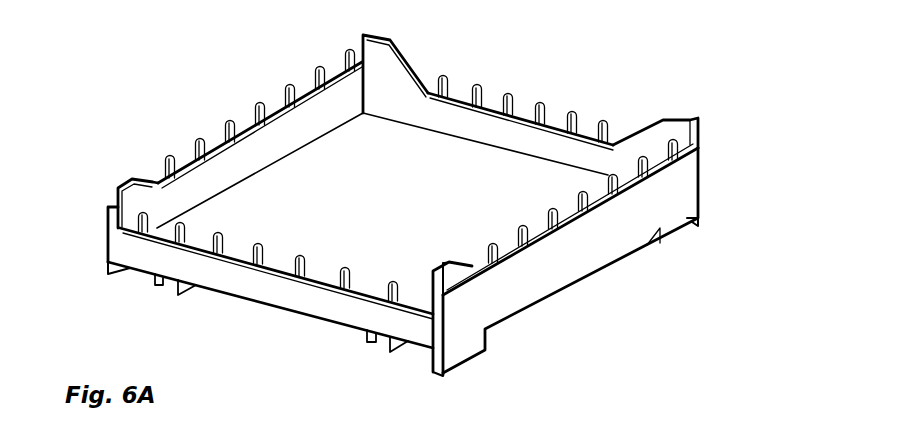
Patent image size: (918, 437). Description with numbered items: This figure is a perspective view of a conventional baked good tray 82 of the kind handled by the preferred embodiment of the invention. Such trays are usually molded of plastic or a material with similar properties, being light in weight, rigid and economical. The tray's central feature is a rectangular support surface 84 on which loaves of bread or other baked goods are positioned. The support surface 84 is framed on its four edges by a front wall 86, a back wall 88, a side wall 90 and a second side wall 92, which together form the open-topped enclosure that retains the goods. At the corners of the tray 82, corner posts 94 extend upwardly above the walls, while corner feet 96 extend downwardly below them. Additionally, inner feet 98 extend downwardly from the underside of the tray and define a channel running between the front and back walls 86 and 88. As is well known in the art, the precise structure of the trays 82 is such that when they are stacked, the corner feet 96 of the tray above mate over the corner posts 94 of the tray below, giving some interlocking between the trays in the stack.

The baked good tray 82 is at (597, 77).
The support surface 84 is at (365, 212).
The front wall 86 is at (273, 292).
The back wall 88 is at (502, 128).
The side wall 90 is at (253, 153).
The side wall 92 is at (578, 246).
The corner posts 94 is at (366, 39).
The corner feet 96 is at (108, 270).
The inner feet 98 is at (165, 295).